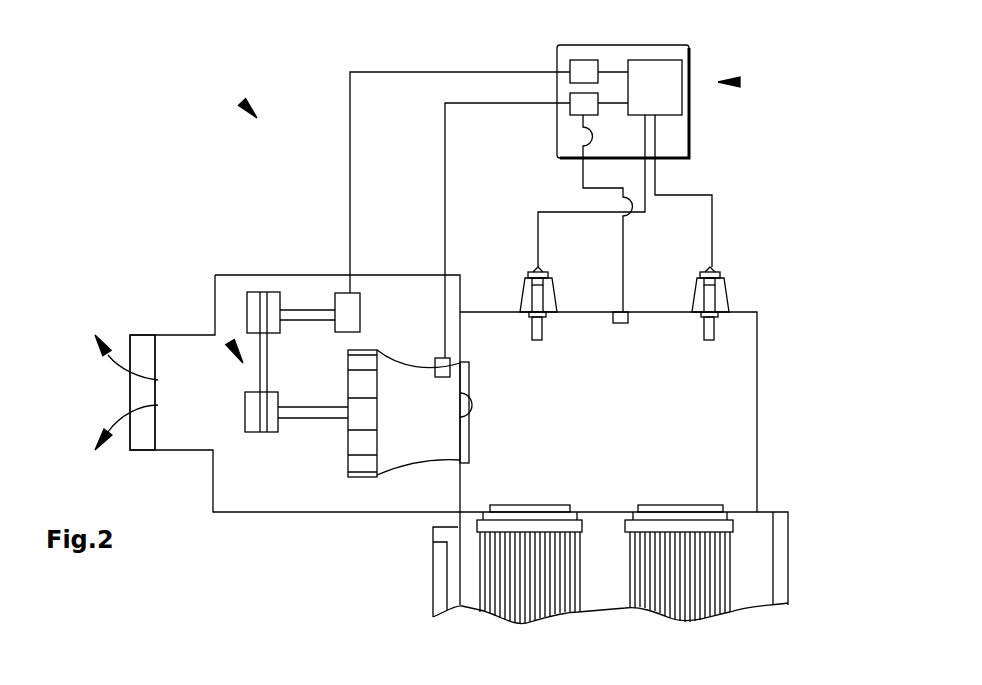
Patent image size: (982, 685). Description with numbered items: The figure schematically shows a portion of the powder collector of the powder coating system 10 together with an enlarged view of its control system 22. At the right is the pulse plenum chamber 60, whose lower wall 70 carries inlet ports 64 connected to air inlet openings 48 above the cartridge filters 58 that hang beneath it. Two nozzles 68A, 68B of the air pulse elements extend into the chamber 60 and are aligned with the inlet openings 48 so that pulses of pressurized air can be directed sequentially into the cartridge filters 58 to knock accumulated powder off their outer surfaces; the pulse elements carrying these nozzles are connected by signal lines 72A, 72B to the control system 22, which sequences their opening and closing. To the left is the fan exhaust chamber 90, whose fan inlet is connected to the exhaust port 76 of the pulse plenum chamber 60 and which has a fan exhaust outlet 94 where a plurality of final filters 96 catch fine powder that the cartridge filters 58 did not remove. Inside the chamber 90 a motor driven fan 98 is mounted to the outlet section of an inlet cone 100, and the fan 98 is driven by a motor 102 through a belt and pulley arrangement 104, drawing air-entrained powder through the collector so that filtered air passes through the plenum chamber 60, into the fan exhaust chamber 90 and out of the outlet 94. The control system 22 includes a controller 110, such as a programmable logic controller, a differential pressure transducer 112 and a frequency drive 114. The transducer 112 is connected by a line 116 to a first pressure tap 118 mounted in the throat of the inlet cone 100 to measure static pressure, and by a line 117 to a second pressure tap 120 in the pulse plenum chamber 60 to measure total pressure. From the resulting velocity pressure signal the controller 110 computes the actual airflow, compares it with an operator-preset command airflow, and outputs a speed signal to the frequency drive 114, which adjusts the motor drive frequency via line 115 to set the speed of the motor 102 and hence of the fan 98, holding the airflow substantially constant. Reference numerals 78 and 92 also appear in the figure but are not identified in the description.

The powder coating system 10 is at (245, 106).
The control system 22 is at (738, 82).
The air inlet openings 48 is at (532, 512).
The cartridge filters 58 is at (510, 570).
The pulse plenum chamber 60 is at (745, 312).
The inlet ports 64 is at (483, 505).
The nozzle 68A is at (555, 285).
The nozzle 68B is at (723, 279).
The lower wall 70 is at (745, 512).
The signal line 72A is at (547, 211).
The signal line 72B is at (682, 195).
The exhaust port 76 is at (463, 418).
The sensor lead 78 is at (441, 330).
The fan exhaust chamber 90 is at (272, 512).
The fan outlet 92 is at (443, 407).
The fan exhaust outlet 94 is at (157, 357).
The final filters 96 is at (138, 350).
The motor driven fan 98 is at (367, 350).
The inlet cone 100 is at (427, 455).
The motor 102 is at (345, 302).
The belt and pulley arrangement 104 is at (229, 342).
The controller 110 is at (662, 70).
The differential pressure transducer 112 is at (572, 97).
The frequency drive 114 is at (586, 60).
The line 115 is at (402, 70).
The line 116 is at (445, 197).
The line 117 is at (625, 252).
The first pressure tap 118 is at (435, 367).
The second pressure tap 120 is at (625, 310).